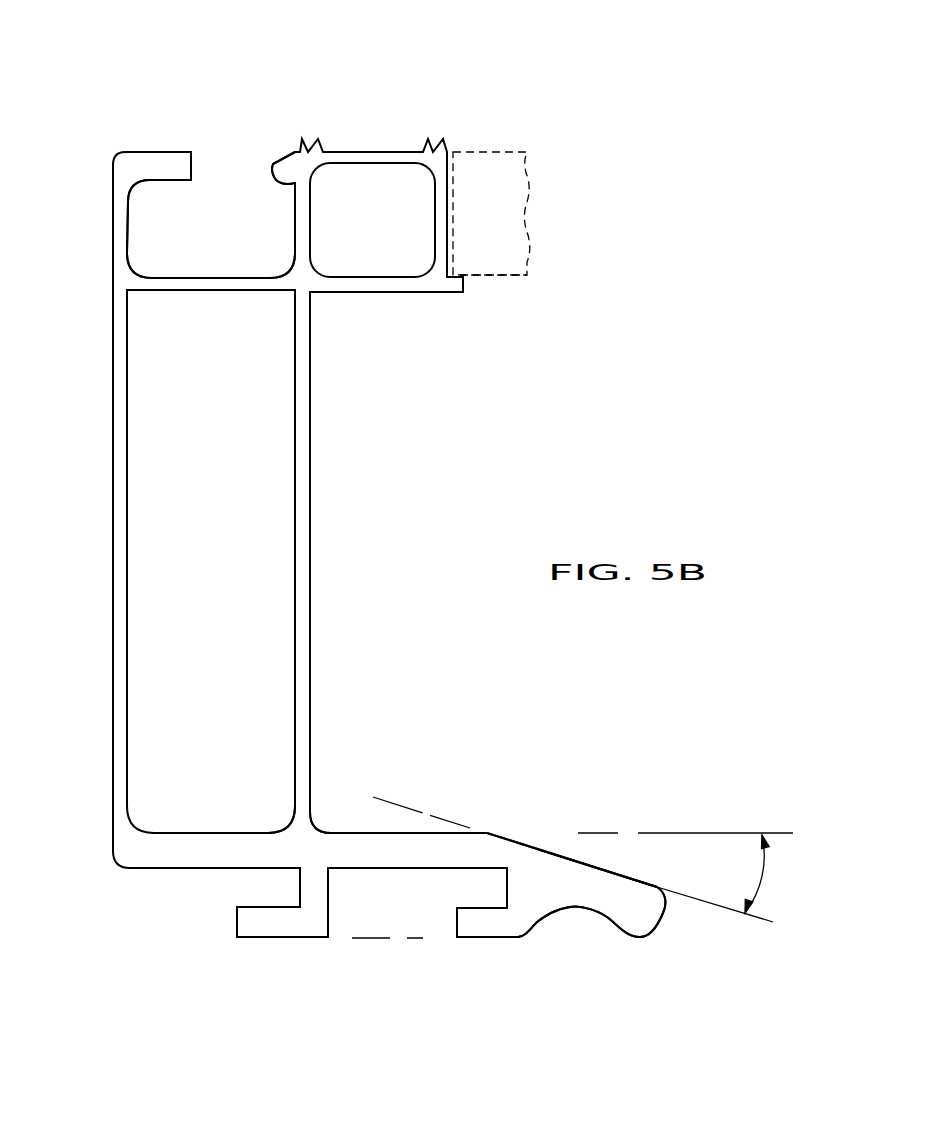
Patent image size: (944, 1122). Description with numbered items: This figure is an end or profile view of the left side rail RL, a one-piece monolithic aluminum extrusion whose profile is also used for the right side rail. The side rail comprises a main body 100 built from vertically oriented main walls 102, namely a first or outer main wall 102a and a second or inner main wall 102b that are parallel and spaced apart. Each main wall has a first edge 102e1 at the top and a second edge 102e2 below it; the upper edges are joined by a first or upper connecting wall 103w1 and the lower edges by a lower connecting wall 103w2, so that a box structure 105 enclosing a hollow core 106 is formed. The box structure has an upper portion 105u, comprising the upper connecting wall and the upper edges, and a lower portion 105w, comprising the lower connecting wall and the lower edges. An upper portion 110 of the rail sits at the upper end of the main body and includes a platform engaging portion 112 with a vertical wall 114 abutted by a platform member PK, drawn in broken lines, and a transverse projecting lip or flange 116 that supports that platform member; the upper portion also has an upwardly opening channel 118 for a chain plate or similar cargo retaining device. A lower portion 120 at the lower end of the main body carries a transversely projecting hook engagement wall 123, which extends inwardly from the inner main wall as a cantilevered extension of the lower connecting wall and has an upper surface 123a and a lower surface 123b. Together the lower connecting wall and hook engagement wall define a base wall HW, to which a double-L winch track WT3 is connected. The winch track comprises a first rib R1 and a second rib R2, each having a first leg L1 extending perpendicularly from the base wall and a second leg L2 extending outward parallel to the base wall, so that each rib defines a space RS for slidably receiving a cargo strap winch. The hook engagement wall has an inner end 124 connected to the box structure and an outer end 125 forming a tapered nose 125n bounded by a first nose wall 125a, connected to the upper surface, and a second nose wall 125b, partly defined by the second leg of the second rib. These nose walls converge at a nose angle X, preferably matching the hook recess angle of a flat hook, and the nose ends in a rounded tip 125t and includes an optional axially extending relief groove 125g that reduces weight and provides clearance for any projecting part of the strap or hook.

The main body 100 is at (322, 523).
The main wall 102 is at (313, 434).
The first or outer main wall 102a is at (122, 525).
The second or inner main wall 102b is at (312, 395).
The first edge 102e1 is at (122, 368).
The second edge 102e2 is at (302, 745).
The box structure 105 is at (307, 475).
The upper portion of box structure 105u is at (243, 277).
The lower portion of box structure 105w is at (270, 817).
The first or upper connecting wall 103w1 is at (240, 292).
The lower connecting wall 103w2 is at (193, 830).
The hollow core 106 is at (228, 490).
The upper portion of side rail 110 is at (312, 140).
The platform engaging portion 112 is at (440, 155).
The vertical wall 114 is at (442, 215).
The platform member PK is at (527, 277).
The transverse projecting lip or flange 116 is at (460, 293).
The open channel 118 is at (232, 157).
The left side rail RL is at (148, 150).
The lower portion of side rail 120 is at (313, 725).
The hook engagement wall 123 is at (360, 870).
The upper surface of hook engagement wall 123a is at (428, 837).
The lower surface of hook engagement wall 123b is at (457, 878).
The inner end 124 is at (342, 842).
The outer end 125 is at (522, 844).
The first nose wall 125a is at (623, 875).
The tapered nose 125n is at (568, 857).
The rounded tip 125t is at (667, 915).
The relief groove 125g is at (583, 908).
The second nose wall 125b is at (503, 938).
The nose angle X is at (388, 803).
The first leg L1 is at (313, 897).
The second leg L2 is at (280, 925).
The first rib R1 is at (238, 922).
The second rib R2 is at (477, 938).
The space RS is at (240, 898).
The winch track WT3 is at (210, 892).
The base wall HW is at (410, 852).